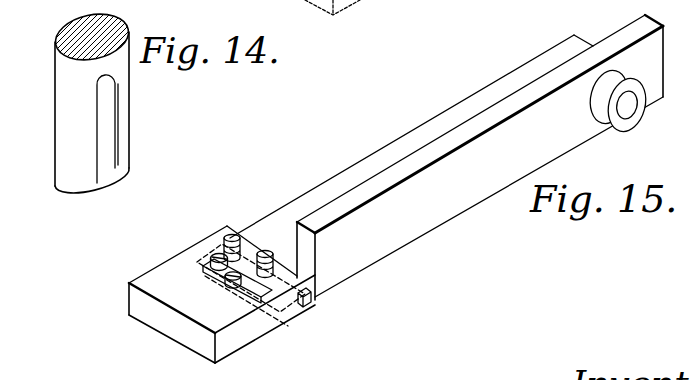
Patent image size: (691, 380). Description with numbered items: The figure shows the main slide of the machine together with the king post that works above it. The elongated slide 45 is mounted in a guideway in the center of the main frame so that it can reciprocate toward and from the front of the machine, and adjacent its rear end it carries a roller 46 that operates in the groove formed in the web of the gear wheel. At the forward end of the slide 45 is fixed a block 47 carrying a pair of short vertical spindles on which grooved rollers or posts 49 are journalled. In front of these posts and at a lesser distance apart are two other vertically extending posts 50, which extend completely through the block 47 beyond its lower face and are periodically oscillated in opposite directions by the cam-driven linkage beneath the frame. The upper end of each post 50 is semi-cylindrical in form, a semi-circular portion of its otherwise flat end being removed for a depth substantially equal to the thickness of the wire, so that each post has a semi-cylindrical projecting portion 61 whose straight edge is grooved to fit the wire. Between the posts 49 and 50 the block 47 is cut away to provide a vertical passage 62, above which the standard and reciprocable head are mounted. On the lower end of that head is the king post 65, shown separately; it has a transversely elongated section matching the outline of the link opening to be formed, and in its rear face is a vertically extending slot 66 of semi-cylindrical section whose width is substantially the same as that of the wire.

In FIG. 15, the slide 45 is at (450, 113).
In FIG. 15, the roller 46 is at (626, 121).
In FIG. 15, the block 47 is at (190, 333).
In FIG. 15, the grooved rollers or posts 49 is at (262, 252).
In FIG. 15, the posts 50 is at (212, 273).
In FIG. 15, the semi-cylindrical projecting portion 61 is at (212, 255).
In FIG. 15, the vertical passage 62 is at (283, 303).
In FIG. 14, the king post 65 is at (64, 94).
In FIG. 14, the slot 66 is at (107, 125).